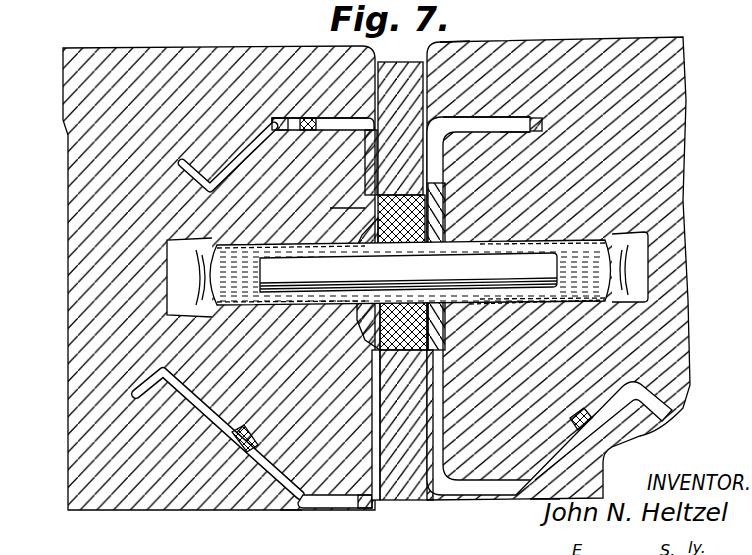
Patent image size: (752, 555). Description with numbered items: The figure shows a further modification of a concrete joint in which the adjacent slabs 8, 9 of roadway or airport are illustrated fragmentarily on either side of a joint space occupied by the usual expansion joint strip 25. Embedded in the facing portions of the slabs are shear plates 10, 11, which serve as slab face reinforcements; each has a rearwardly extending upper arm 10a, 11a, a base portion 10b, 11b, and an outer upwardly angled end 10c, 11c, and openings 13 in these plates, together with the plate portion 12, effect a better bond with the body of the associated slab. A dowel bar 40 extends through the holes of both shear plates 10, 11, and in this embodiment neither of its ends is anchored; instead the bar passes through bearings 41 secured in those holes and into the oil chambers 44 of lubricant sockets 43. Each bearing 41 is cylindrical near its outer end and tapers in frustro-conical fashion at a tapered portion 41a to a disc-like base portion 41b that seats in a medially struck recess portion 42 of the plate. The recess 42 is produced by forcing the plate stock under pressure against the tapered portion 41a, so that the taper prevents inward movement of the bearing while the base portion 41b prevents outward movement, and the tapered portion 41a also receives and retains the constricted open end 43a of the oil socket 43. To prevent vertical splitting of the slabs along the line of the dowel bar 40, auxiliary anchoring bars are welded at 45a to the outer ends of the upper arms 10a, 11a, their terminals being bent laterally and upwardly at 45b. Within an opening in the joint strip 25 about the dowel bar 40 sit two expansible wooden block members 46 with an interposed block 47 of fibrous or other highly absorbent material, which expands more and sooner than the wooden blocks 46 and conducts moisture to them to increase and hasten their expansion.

The slab 8 is at (65, 77).
The slab 9 is at (685, 55).
The shear plate 10 is at (372, 409).
The upper arm 10a is at (293, 114).
The lower flange of left form 10b is at (337, 509).
The outer upwardly angled end 10c is at (240, 453).
The shear plate 11 is at (444, 416).
The upper arm 11a is at (521, 133).
The form edge 11b is at (455, 7).
The outer upwardly angled end 11c is at (578, 424).
The top flange 12 is at (333, 117).
The opening 13 is at (319, 3).
The expansion joint strip 25 is at (409, 62).
The dowel bar 40 is at (312, 300).
The bearing 41 is at (334, 212).
The tapered portion 41a is at (470, 306).
The disc-like base portion 41b is at (366, 198).
The recess portion 42 is at (362, 340).
The lubricant socket 43 is at (182, 291).
The open end 43a is at (476, 219).
The oil chamber 44 is at (238, 334).
The weld 45a is at (565, 112).
The bent terminal 45b is at (221, 172).
The expansible wooden block member 46 is at (450, 364).
The block 47 is at (444, 172).